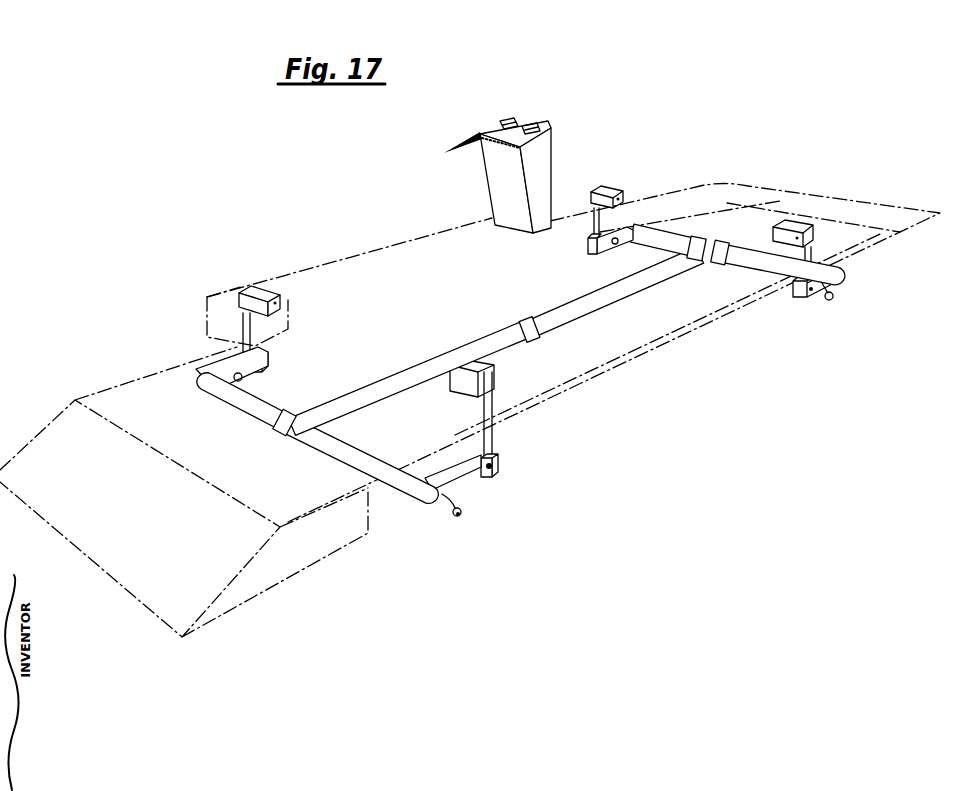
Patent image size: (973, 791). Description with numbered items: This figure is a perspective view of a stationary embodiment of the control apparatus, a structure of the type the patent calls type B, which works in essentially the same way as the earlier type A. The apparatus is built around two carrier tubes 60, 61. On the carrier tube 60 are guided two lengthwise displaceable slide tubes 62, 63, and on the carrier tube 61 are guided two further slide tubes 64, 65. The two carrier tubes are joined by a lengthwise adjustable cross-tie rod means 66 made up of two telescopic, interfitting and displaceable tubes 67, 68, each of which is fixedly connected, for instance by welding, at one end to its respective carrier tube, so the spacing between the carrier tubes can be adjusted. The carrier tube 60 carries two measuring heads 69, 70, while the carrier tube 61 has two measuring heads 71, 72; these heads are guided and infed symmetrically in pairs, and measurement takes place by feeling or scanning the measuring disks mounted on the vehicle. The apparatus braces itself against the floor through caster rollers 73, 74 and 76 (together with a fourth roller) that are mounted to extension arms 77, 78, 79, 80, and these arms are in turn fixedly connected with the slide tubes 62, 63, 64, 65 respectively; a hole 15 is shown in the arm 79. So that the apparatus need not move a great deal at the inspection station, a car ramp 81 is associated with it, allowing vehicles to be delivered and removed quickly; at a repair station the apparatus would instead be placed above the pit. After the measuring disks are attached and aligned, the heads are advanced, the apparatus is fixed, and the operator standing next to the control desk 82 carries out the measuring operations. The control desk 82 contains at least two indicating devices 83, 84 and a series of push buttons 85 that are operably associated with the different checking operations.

The hole 15 is at (615, 244).
The carrier tube 60 is at (299, 442).
The carrier tube 61 is at (704, 243).
The slide tube 62 is at (236, 405).
The slide tube 63 is at (347, 462).
The slide tube 64 is at (661, 236).
The slide tube 65 is at (742, 262).
The cross-tie rod means 66 is at (521, 318).
The telescopic tube 67 is at (407, 375).
The telescopic tube 68 is at (588, 303).
The measuring head 69 is at (263, 287).
The measuring head 70 is at (466, 394).
The measuring head 71 is at (607, 188).
The measuring head 72 is at (808, 226).
The caster roller 73 is at (250, 378).
The caster roller 74 is at (462, 520).
The caster roller 76 is at (834, 300).
The extension arm 77 is at (216, 358).
The extension arm 78 is at (481, 485).
The extension arm 79 is at (589, 242).
The extension arm 80 is at (803, 298).
The car ramp 81 is at (306, 568).
The control desk 82 is at (551, 160).
The indicating device 83 is at (510, 117).
The indicating device 84 is at (532, 124).
The push buttons 85 is at (446, 153).